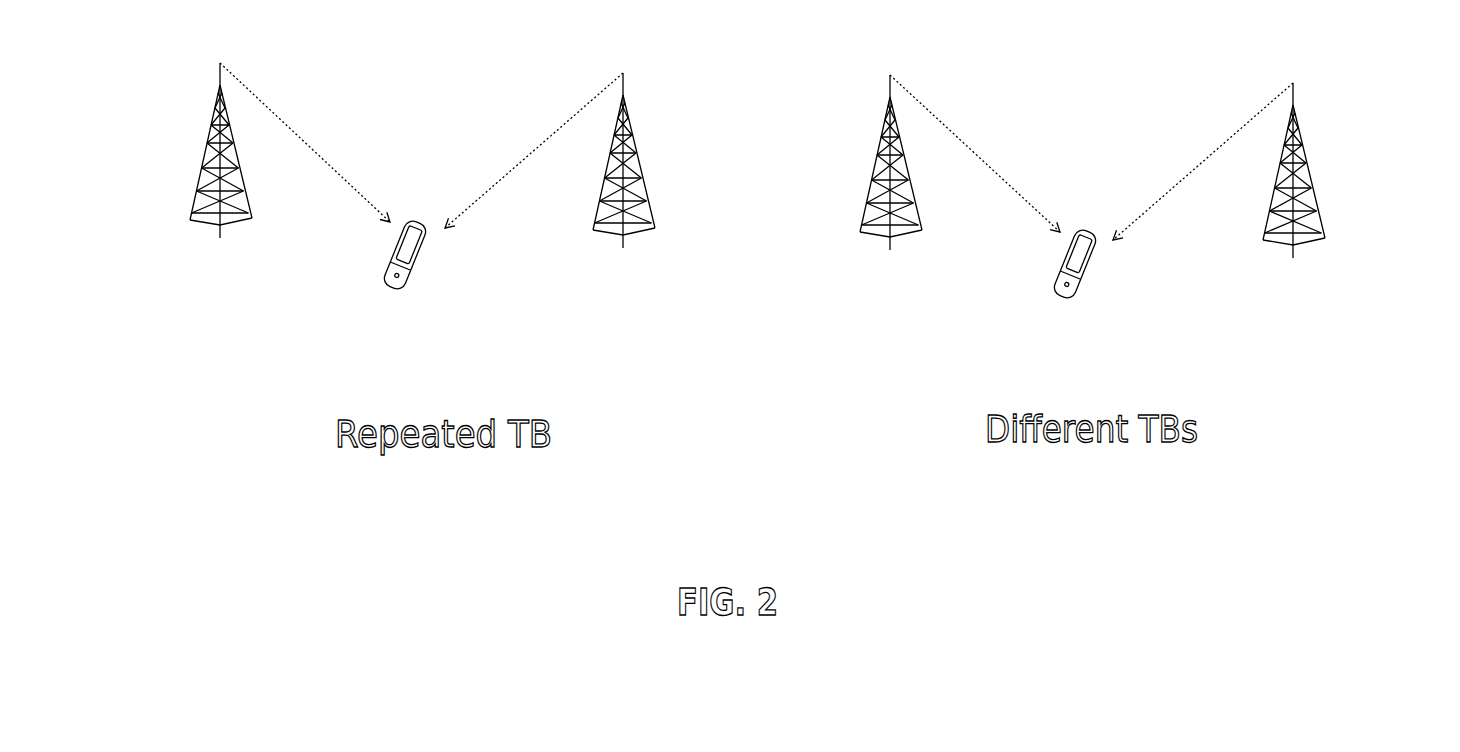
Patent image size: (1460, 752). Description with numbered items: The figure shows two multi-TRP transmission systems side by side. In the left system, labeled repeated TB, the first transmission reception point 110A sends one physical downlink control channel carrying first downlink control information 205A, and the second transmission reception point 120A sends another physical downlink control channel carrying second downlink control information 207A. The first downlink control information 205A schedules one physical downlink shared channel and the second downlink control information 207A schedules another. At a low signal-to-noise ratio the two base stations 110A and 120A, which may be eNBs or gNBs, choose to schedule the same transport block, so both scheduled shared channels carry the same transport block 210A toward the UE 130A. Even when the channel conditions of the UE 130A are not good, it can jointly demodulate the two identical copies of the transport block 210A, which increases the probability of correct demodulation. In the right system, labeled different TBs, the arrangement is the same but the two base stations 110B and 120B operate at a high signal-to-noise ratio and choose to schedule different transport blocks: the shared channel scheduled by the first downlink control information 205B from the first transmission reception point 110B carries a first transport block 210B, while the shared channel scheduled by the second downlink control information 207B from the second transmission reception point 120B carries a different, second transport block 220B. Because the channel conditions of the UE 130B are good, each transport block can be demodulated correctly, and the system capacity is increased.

The TRP 0 110A is at (207, 148).
The TRP 1 120A is at (637, 163).
The UE 130A is at (413, 275).
The DCI 0 205A is at (263, 158).
The DCI 1 207A is at (553, 177).
The TB0 210A is at (282, 78).
The TRP 0 110B is at (868, 207).
The TRP 1 120B is at (1312, 205).
The UE 130B is at (1085, 287).
The DCI0 205B is at (943, 167).
The DCI1 207B is at (1218, 187).
The TB0 210B is at (955, 85).
The TB1 220B is at (1198, 130).